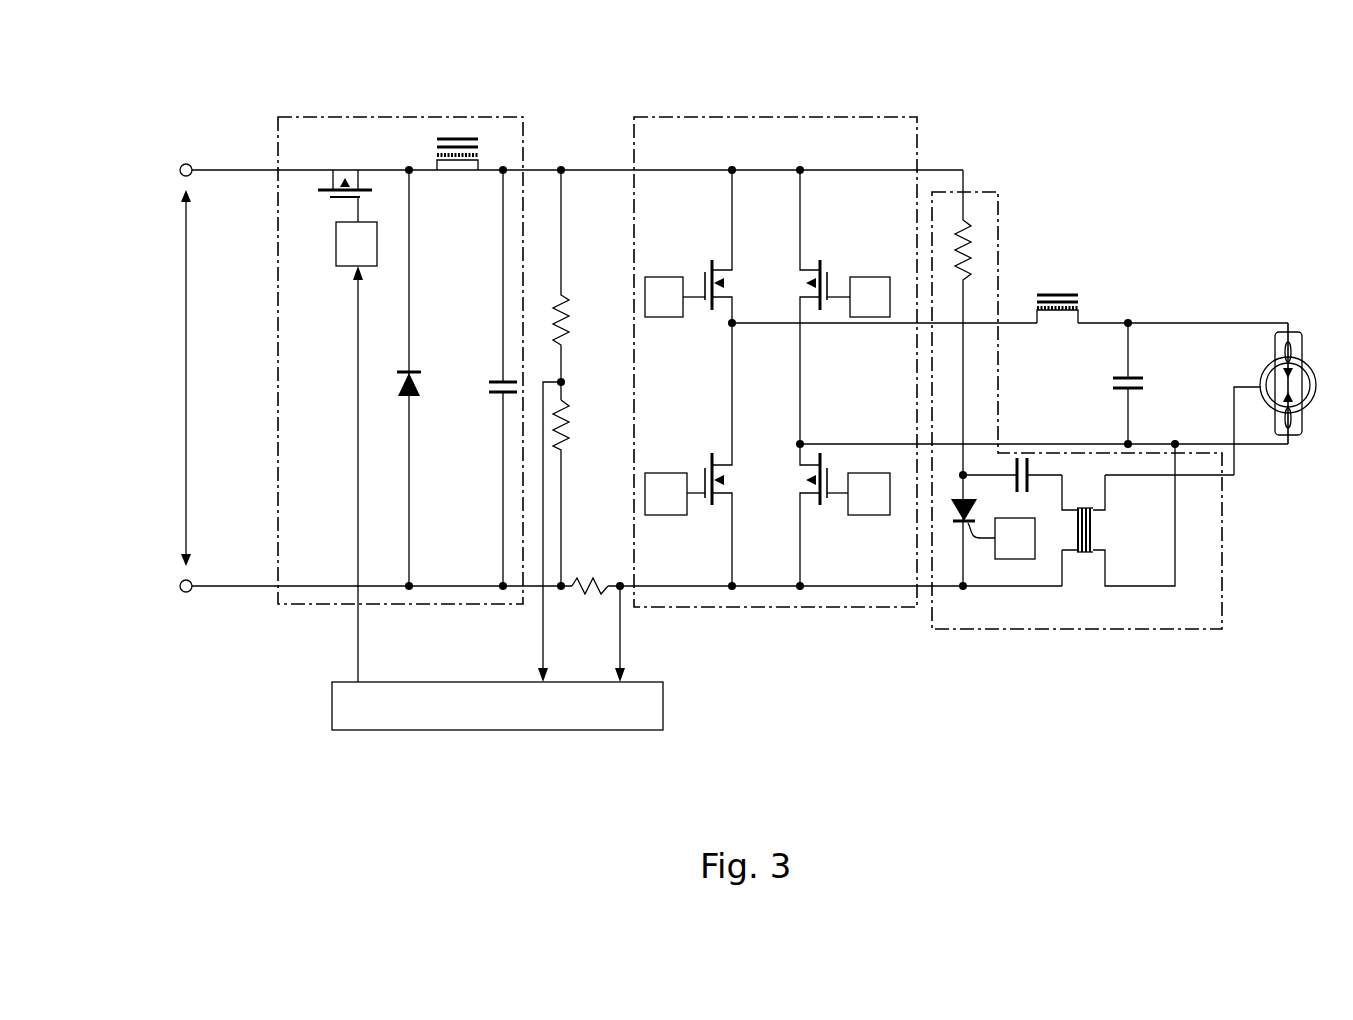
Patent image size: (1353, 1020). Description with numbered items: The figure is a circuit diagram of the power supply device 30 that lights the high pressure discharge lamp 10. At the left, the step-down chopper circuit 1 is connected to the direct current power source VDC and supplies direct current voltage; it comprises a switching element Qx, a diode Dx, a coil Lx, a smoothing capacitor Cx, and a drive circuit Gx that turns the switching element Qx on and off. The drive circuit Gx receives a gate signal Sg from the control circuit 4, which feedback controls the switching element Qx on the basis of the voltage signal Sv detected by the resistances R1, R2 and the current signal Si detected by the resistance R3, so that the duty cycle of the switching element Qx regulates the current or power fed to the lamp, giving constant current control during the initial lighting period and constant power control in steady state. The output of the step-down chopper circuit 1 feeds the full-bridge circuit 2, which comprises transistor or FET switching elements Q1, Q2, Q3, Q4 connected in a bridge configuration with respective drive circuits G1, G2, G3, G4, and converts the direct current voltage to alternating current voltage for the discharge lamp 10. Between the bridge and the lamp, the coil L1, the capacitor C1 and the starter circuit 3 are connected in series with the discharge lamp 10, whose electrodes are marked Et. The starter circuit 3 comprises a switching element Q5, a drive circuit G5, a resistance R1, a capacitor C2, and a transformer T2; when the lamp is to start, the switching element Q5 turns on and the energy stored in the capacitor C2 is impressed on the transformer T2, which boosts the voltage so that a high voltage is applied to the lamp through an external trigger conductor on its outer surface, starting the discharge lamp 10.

The step-down chopper circuit 1 is at (389, 84).
The full-bridge inverter circuit 2 is at (775, 84).
The starter circuit 3 is at (1058, 636).
The control circuit 4 is at (668, 696).
The discharge lamp 10 is at (1292, 456).
The power supply device 30 is at (1177, 150).
The switching element Qx is at (318, 200).
The drive circuit Gx is at (336, 268).
The coil Lx is at (455, 172).
The smoothing capacitor Cx is at (500, 380).
The diode Dx is at (416, 392).
The resistance R1 is at (568, 338).
The resistance R2 is at (566, 428).
The resistance R3 is at (592, 584).
The gate control signal Sg is at (355, 660).
The voltage signal Sv is at (540, 656).
The current signal Si is at (628, 636).
The direct current power source VDC is at (158, 378).
The switching element Q1 is at (700, 258).
The switching element Q2 is at (704, 454).
The switching element Q3 is at (824, 258).
The switching element Q4 is at (826, 512).
The drive circuit G1 is at (666, 320).
The drive circuit G2 is at (668, 518).
The drive circuit G3 is at (872, 278).
The drive circuit G4 is at (878, 518).
The switching element Q5 is at (953, 535).
The drive circuit G5 is at (1015, 563).
The capacitor C2 is at (1024, 462).
The transformer T2 is at (1084, 566).
The coil L1 is at (1057, 295).
The capacitor C1 is at (1148, 383).
The discharge lamp electrodes Et is at (1271, 399).